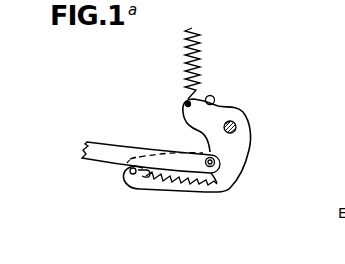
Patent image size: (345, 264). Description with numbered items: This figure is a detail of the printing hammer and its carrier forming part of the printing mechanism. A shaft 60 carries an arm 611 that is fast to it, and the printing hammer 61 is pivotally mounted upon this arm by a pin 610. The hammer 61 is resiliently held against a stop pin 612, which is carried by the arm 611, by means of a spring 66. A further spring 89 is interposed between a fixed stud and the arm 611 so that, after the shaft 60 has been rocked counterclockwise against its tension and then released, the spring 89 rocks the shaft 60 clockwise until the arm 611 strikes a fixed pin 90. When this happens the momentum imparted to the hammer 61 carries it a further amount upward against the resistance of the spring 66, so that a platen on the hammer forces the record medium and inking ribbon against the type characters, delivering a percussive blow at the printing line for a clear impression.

The shaft 60 is at (236, 124).
The printing hammer 61 is at (86, 151).
The spring 66 is at (195, 192).
The spring 89 is at (182, 52).
The fixed pin 90 is at (214, 98).
The pin 610 is at (207, 157).
The arm 611 is at (238, 163).
The stop pin 612 is at (131, 173).